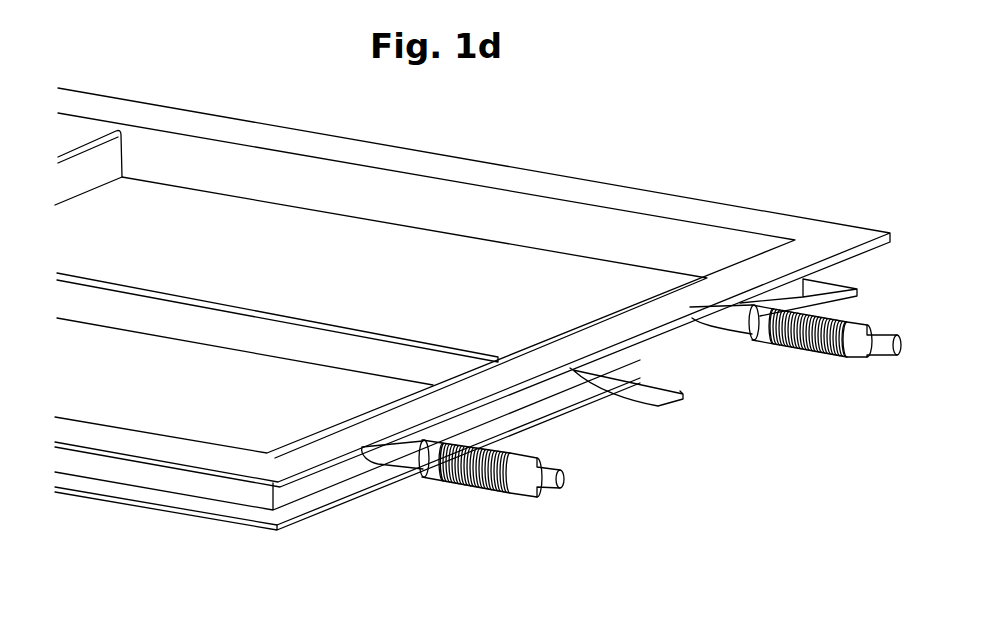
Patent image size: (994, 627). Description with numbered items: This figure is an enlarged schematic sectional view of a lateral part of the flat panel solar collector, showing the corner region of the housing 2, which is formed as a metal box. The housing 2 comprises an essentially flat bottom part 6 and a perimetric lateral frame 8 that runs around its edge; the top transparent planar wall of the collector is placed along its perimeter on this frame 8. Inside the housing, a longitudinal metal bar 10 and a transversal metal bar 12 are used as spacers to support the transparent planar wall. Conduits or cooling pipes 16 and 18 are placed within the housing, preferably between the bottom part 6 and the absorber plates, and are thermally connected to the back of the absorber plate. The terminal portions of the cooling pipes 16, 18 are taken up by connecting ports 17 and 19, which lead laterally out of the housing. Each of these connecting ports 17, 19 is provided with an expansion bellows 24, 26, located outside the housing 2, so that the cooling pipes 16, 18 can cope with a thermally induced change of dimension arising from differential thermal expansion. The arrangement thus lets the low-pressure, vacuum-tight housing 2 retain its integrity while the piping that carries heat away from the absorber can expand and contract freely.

The housing 2 is at (128, 443).
The bottom part 6 is at (233, 508).
The perimetric lateral frame 8 is at (183, 482).
The longitudinal metal bar 10 is at (287, 330).
The transversal metal bar 12 is at (118, 148).
The cooling pipe 16 is at (870, 357).
The connecting port 17 is at (742, 327).
The cooling pipe 18 is at (537, 488).
The connecting port 19 is at (412, 460).
The expansion bellows 24 is at (830, 357).
The expansion bellows 26 is at (490, 485).